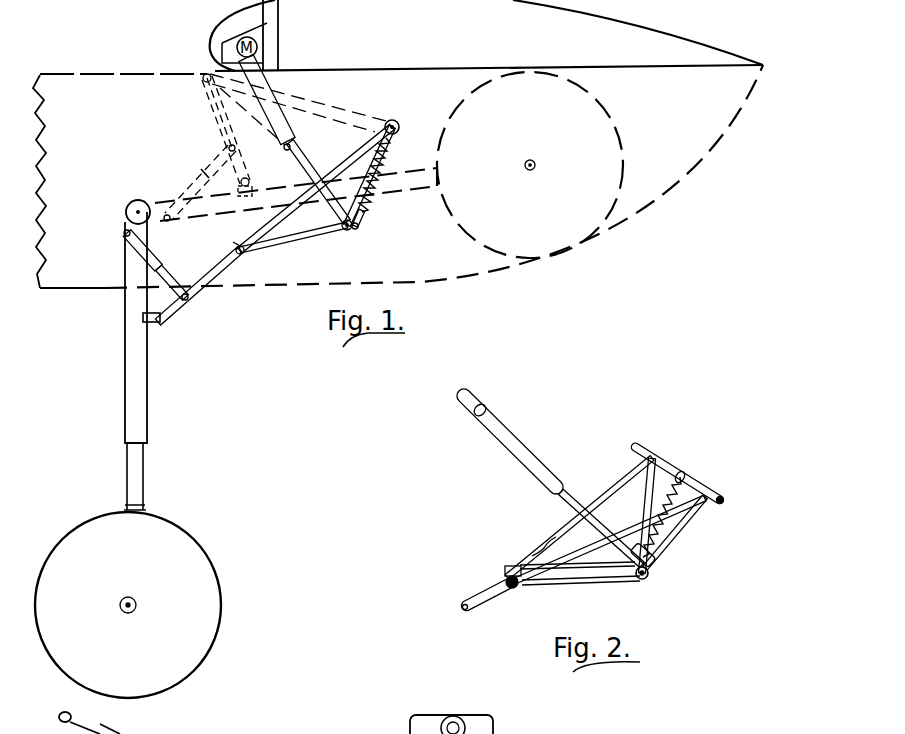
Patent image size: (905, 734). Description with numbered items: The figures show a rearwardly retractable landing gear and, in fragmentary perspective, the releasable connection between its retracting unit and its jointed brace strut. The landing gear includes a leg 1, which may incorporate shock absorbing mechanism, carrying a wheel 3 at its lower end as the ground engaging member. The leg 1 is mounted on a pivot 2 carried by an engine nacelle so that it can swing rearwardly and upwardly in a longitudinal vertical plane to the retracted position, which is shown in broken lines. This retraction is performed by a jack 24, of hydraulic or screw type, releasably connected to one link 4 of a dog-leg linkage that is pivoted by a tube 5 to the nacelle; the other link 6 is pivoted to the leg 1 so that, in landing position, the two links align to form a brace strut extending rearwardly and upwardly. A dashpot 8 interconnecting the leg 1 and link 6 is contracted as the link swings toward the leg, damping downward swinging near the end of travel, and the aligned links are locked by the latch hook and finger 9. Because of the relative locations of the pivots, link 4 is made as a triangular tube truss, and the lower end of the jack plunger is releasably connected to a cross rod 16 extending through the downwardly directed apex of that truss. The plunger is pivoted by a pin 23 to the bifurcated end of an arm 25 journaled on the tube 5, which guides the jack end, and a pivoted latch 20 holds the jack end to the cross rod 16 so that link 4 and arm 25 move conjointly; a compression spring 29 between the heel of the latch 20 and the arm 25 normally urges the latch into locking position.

In FIG. 1, the leg 1 is at (132, 415).
In FIG. 1, the pivot 2 is at (138, 200).
In FIG. 1, the wheel 3 is at (180, 540).
In FIG. 1, the link 4 is at (282, 220).
In FIG. 2, the link 4 is at (545, 535).
In FIG. 1, the tube 5 is at (397, 122).
In FIG. 2, the tube 5 is at (728, 502).
In FIG. 1, the link 6 is at (204, 282).
In FIG. 2, the link 6 is at (478, 597).
In FIG. 1, the shock absorber or dashpot 8 is at (152, 262).
In FIG. 1, the latch hook and finger 9 is at (238, 246).
In FIG. 2, the latch hook and finger 9 is at (522, 588).
In FIG. 1, the cross rod 16 is at (347, 230).
In FIG. 2, the cross rod 16 is at (648, 578).
In FIG. 1, the pivoted latch 20 is at (365, 223).
In FIG. 2, the pin 23 is at (652, 568).
In FIG. 1, the jack 24 is at (263, 90).
In FIG. 2, the jack 24 is at (512, 449).
In FIG. 1, the arm 25 is at (338, 208).
In FIG. 2, the arm 25 is at (660, 502).
In FIG. 1, the compression spring 29 is at (372, 190).
In FIG. 2, the compression spring 29 is at (670, 524).